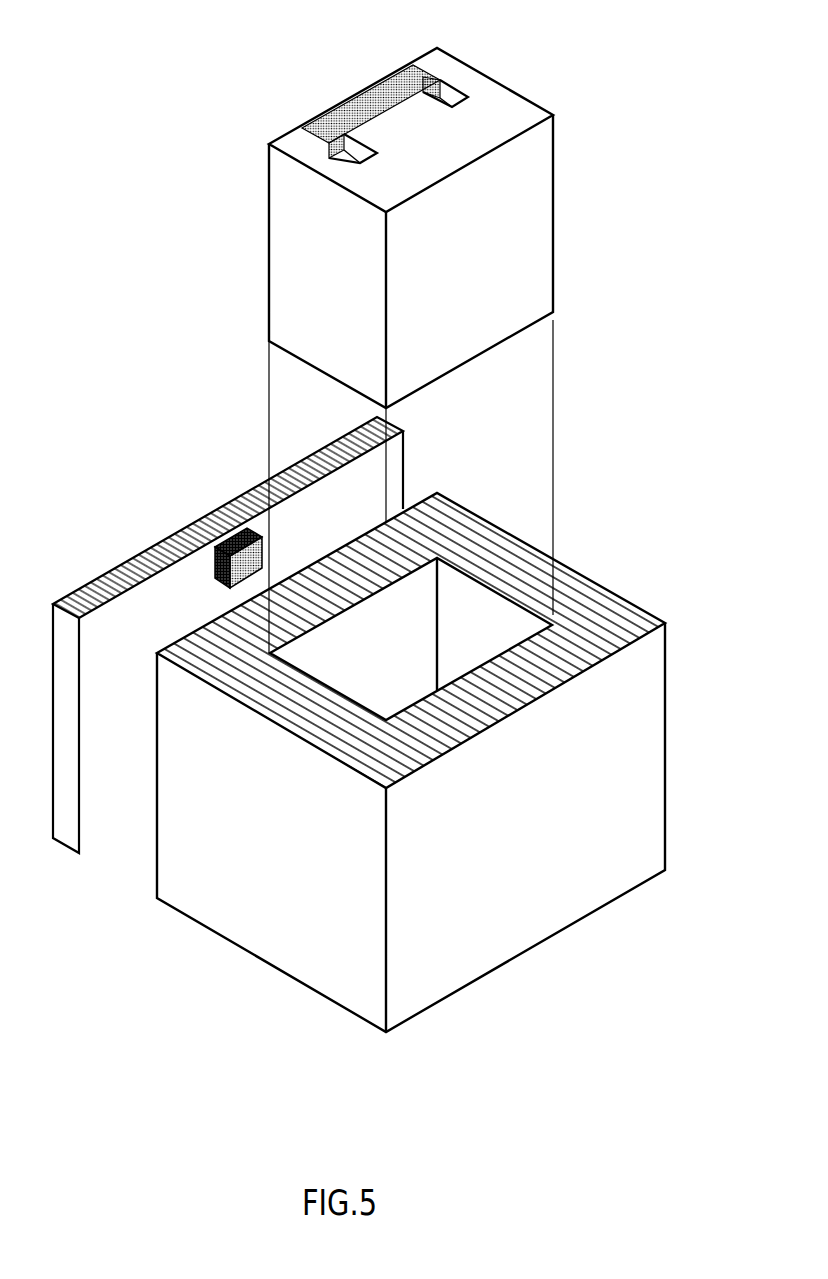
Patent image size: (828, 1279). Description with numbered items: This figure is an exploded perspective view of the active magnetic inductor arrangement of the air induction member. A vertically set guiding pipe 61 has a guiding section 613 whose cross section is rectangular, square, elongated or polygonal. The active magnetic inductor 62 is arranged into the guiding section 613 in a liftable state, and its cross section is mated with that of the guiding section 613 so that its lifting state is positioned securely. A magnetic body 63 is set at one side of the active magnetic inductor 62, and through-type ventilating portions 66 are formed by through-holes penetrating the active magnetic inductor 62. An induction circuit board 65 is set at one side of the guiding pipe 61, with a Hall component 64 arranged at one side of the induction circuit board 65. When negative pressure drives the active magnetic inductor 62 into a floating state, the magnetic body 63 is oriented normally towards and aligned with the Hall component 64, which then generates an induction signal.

The guiding pipe 61 is at (632, 790).
The guiding section 613 is at (497, 615).
The active magnetic inductor 62 is at (567, 232).
The magnetic body 63 is at (360, 97).
The Hall component 64 is at (232, 530).
The induction circuit board 65 is at (145, 562).
The ventilating portions 66 is at (355, 146).